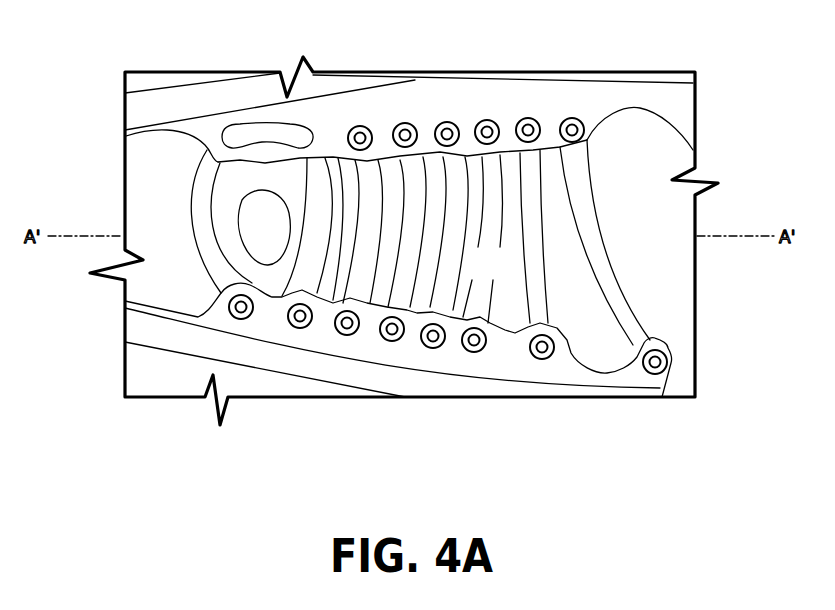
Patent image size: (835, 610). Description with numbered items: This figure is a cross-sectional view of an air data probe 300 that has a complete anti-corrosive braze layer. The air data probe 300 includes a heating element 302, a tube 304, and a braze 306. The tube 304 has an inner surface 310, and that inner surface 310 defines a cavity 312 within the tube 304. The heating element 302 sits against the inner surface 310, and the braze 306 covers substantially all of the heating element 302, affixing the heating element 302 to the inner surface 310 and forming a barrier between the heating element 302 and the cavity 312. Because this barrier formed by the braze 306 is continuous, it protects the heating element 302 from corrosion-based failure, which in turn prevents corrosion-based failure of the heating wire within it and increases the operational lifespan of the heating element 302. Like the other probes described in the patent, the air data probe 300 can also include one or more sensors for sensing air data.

The air data probe 300 is at (97, 121).
The heating element 302 is at (447, 121).
The tube 304 is at (255, 96).
The braze 306 is at (550, 123).
The inner surface 310 is at (408, 377).
The cavity 312 is at (505, 275).